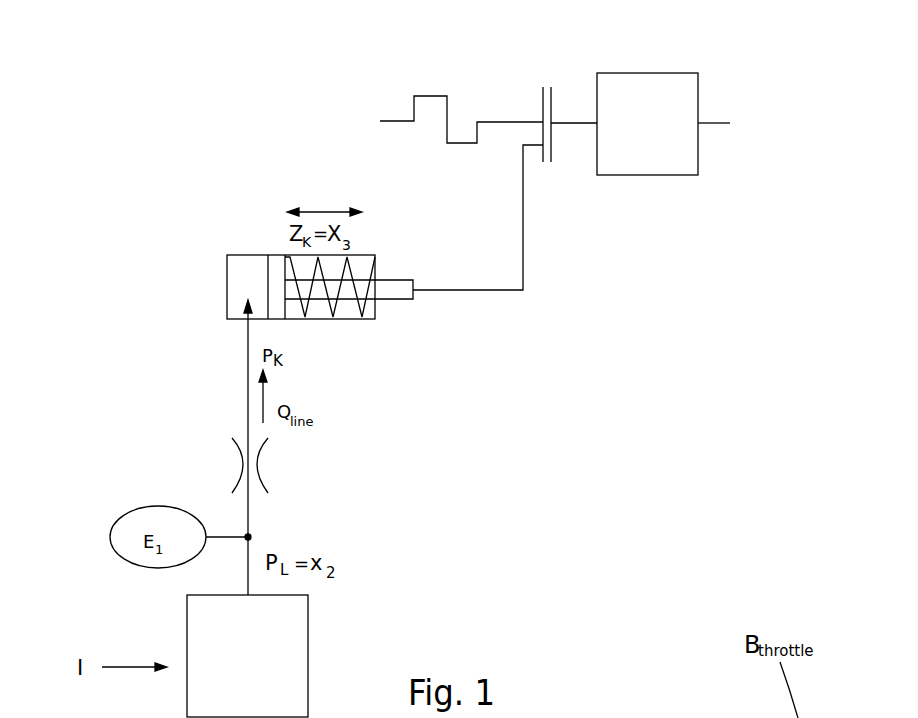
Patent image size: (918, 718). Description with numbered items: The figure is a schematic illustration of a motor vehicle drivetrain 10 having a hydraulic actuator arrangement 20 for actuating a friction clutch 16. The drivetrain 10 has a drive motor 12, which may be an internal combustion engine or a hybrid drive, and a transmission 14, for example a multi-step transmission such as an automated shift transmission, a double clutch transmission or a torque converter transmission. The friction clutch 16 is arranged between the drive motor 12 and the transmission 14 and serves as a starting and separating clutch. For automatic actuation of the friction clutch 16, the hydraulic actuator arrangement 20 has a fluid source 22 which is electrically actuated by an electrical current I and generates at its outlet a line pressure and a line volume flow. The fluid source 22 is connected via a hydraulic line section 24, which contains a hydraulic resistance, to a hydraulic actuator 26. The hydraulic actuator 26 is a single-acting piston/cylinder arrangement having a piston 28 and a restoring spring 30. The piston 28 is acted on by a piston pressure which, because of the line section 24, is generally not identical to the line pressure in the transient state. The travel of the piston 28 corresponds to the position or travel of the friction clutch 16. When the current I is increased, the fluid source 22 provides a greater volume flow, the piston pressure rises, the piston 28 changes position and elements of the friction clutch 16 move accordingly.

The drivetrain 10 is at (580, 221).
The drive motor 12 is at (400, 120).
The transmission 14 is at (698, 100).
The friction clutch 16 is at (555, 98).
The hydraulic actuator arrangement 20 is at (158, 205).
The fluid source 22 is at (310, 662).
The hydraulic line section 24 is at (243, 463).
The hydraulic actuator 26 is at (368, 333).
The piston 28 is at (278, 255).
The restoring spring 30 is at (337, 302).